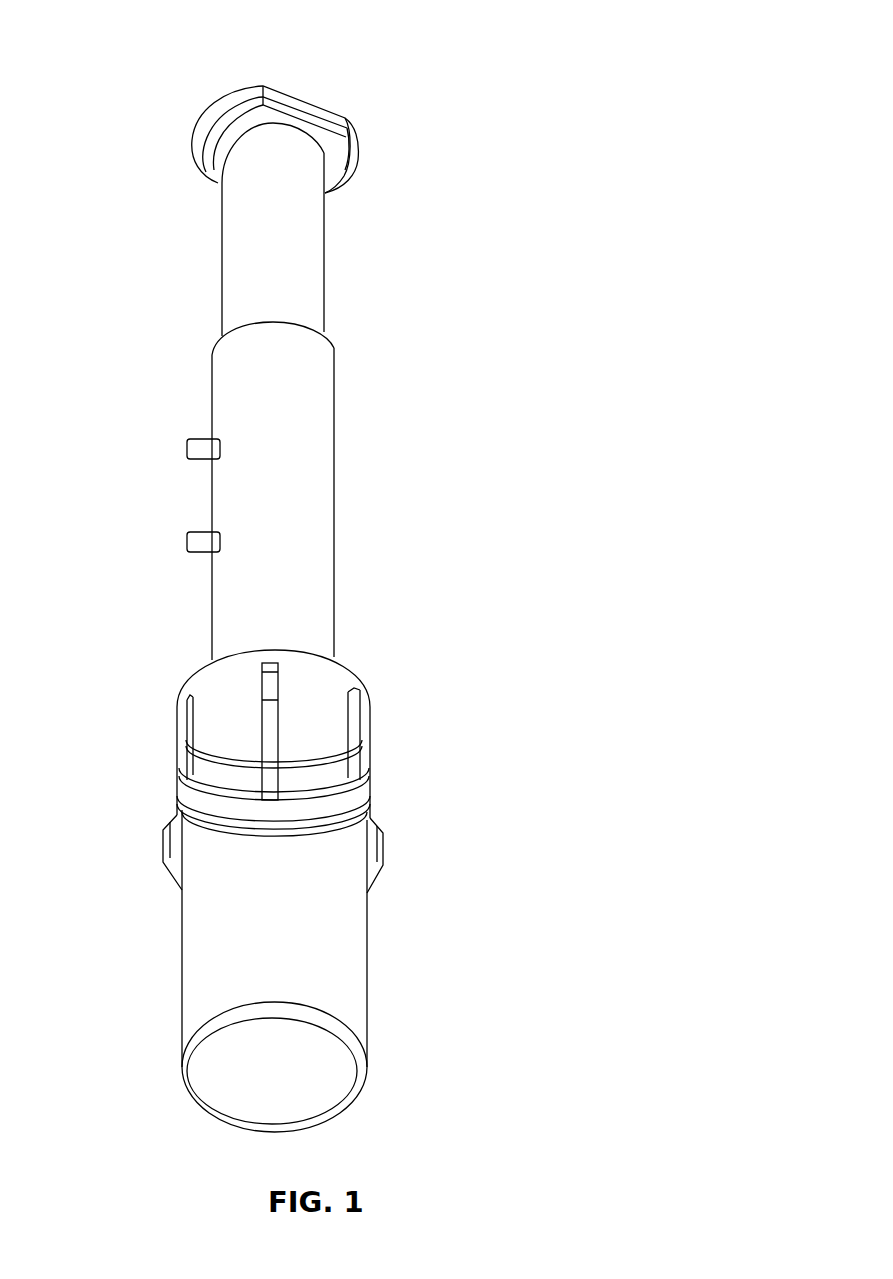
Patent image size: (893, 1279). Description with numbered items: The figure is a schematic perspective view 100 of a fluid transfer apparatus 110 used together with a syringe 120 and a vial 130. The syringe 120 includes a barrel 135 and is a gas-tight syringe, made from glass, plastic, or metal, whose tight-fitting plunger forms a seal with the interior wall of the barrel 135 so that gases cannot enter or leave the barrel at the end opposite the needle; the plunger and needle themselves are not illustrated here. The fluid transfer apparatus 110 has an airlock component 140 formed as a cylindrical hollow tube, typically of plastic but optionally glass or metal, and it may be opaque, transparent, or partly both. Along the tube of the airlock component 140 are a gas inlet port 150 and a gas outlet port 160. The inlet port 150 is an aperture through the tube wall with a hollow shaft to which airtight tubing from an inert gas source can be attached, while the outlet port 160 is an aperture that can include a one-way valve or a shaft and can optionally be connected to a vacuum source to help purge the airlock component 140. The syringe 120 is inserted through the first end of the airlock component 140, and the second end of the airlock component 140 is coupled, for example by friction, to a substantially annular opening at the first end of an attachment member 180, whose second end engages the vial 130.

The perspective view 100 is at (443, 86).
The fluid transfer apparatus 110 is at (344, 540).
The syringe 120 is at (172, 182).
The vial 130 is at (388, 962).
The barrel 135 is at (325, 250).
The airlock component 140 is at (335, 458).
The gas inlet port 150 is at (187, 543).
The gas outlet port 160 is at (187, 447).
The attachment member 180 is at (343, 690).